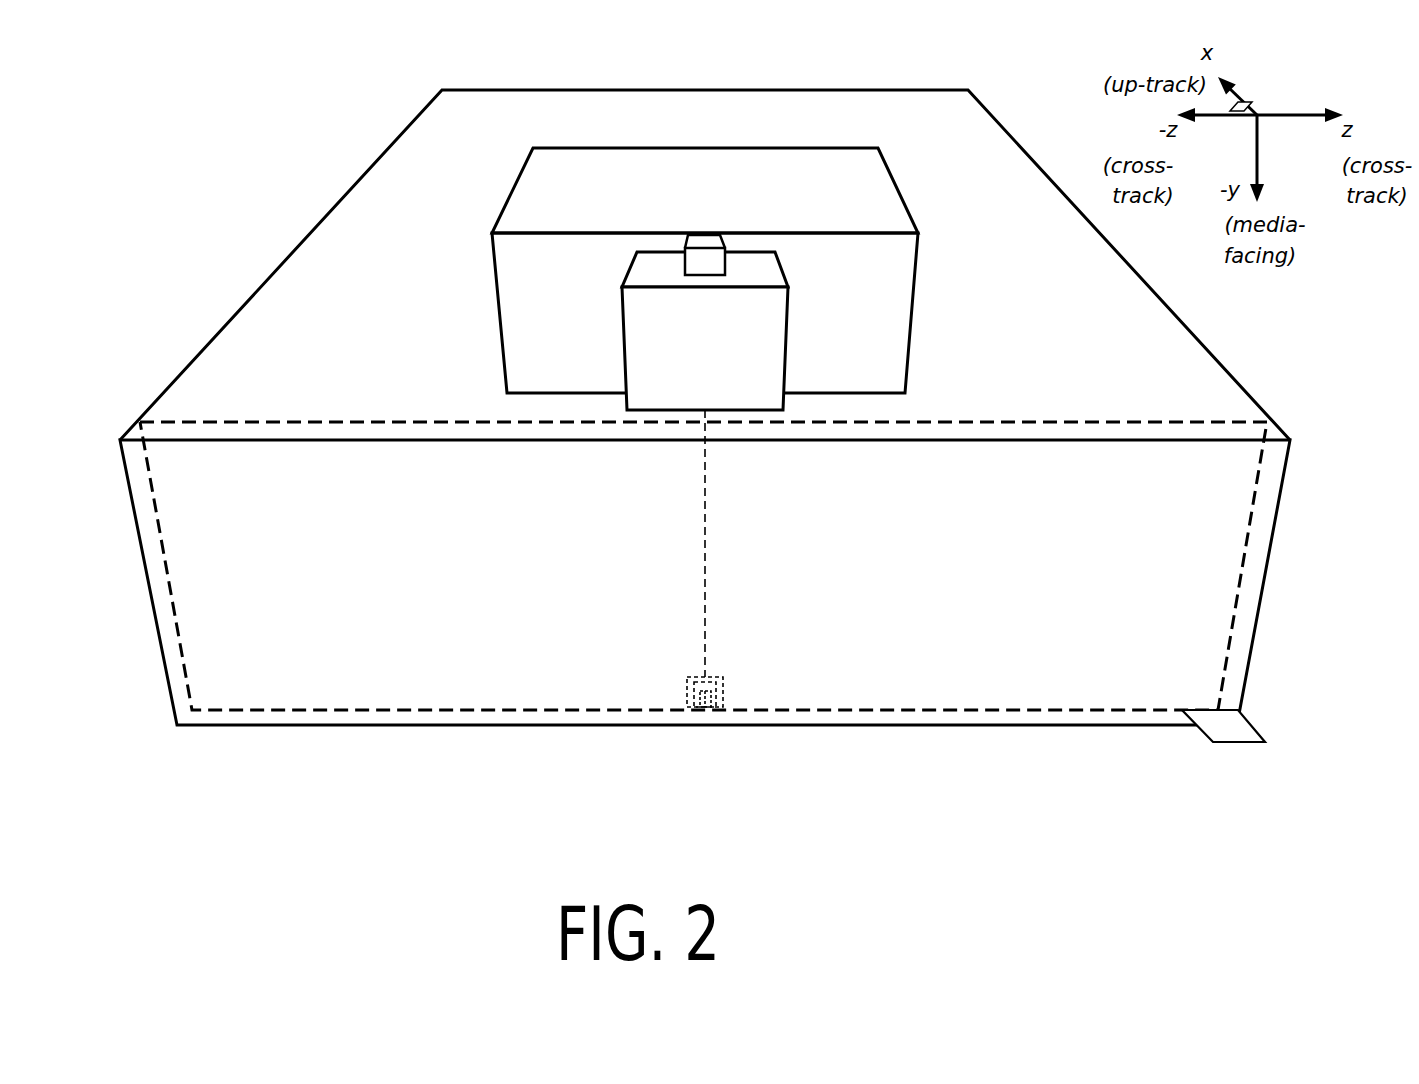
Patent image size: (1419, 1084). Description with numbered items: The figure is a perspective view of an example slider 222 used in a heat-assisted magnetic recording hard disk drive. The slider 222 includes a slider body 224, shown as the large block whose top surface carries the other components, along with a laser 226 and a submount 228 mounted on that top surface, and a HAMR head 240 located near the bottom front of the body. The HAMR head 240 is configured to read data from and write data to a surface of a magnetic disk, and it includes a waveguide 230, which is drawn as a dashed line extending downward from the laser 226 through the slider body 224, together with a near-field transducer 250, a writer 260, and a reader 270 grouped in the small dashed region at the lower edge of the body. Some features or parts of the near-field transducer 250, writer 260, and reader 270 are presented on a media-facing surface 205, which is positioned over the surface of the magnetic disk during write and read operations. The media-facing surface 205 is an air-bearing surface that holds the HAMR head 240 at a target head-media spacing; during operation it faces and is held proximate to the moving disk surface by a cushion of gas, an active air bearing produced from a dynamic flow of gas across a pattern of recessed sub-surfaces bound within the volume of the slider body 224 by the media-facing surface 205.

The slider 222 is at (262, 176).
The slider body 224 is at (963, 132).
The submount 228 is at (515, 313).
The laser 226 is at (768, 355).
The waveguide 230 is at (705, 590).
The HAMR head 240 is at (730, 660).
The near-field transducer (NFT) 250 is at (708, 703).
The writer 260 is at (717, 692).
The reader 270 is at (697, 688).
The media-facing surface 205 is at (1242, 733).